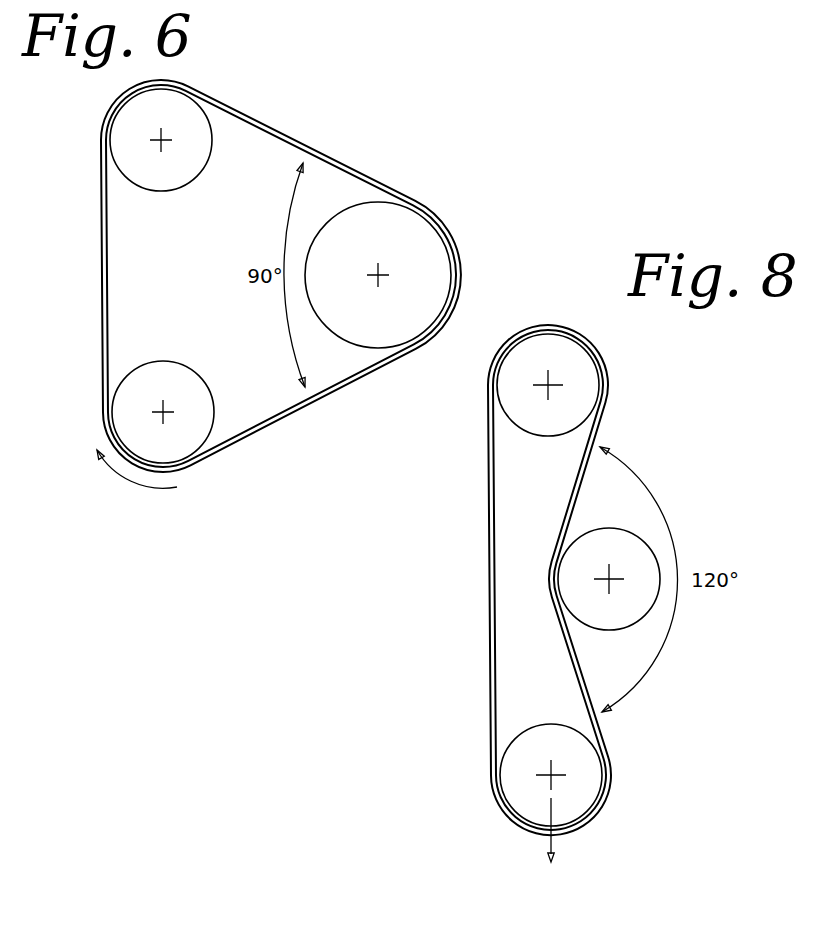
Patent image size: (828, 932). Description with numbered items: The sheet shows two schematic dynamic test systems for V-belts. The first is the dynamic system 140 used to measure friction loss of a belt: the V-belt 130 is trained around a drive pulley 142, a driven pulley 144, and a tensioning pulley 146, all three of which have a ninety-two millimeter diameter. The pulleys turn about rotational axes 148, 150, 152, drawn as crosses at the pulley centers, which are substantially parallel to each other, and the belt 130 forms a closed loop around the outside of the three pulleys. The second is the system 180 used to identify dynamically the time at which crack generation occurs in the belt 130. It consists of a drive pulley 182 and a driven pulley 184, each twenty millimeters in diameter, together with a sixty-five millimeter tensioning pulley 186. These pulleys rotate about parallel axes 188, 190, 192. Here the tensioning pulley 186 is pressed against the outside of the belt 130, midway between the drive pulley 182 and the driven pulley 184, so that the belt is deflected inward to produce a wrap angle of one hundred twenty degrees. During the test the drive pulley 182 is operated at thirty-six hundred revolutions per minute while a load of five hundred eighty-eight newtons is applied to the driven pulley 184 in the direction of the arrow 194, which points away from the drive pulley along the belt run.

In FIG. 6, the V-belt 130 is at (262, 124).
In FIG. 8, the V-belt 130 is at (490, 665).
In FIG. 6, the dynamic system 140 is at (463, 138).
In FIG. 6, the drive pulley 142 is at (133, 391).
In FIG. 6, the driven pulley 144 is at (128, 116).
In FIG. 6, the tensioning pulley 146 is at (433, 270).
In FIG. 6, the rotational axis 148 is at (168, 406).
In FIG. 6, the rotational axis 150 is at (161, 140).
In FIG. 6, the rotational axis 152 is at (378, 275).
In FIG. 8, the system 180 is at (695, 433).
In FIG. 8, the drive pulley 182 is at (582, 380).
In FIG. 8, the driven pulley 184 is at (585, 789).
In FIG. 8, the tensioning pulley 186 is at (582, 553).
In FIG. 8, the axis 188 is at (548, 385).
In FIG. 8, the axis 190 is at (560, 772).
In FIG. 8, the axis 192 is at (606, 580).
In FIG. 8, the arrow 194 is at (551, 843).